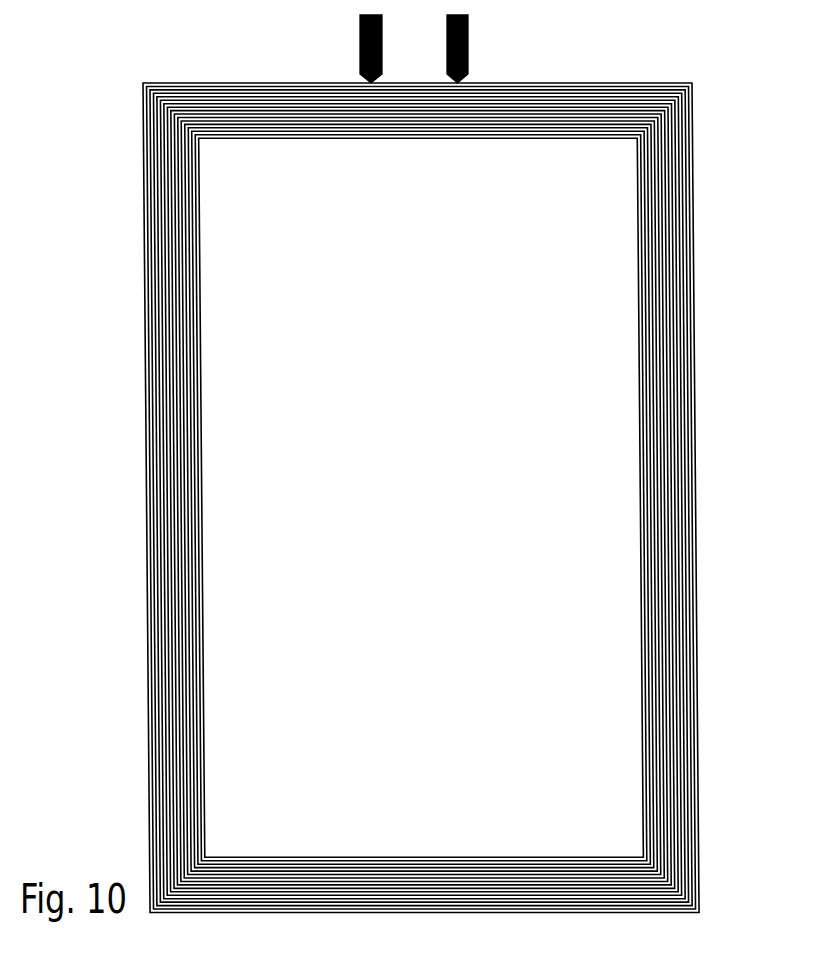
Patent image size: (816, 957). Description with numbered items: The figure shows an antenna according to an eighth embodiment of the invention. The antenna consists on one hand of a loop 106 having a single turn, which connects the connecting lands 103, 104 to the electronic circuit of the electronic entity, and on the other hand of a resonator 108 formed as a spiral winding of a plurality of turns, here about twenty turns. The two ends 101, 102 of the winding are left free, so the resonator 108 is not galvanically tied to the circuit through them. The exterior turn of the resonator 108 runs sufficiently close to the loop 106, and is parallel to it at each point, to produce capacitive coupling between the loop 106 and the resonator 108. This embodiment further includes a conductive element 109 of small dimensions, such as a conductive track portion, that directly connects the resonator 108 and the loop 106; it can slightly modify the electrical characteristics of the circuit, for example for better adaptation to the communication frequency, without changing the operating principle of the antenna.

The end of the winding 101 is at (699, 911).
The end of the winding 102 is at (641, 855).
The connecting land 103 is at (360, 43).
The connecting land 104 is at (469, 44).
The loop 106 is at (228, 84).
The resonator 108 is at (197, 102).
The conductive element 109 is at (333, 913).